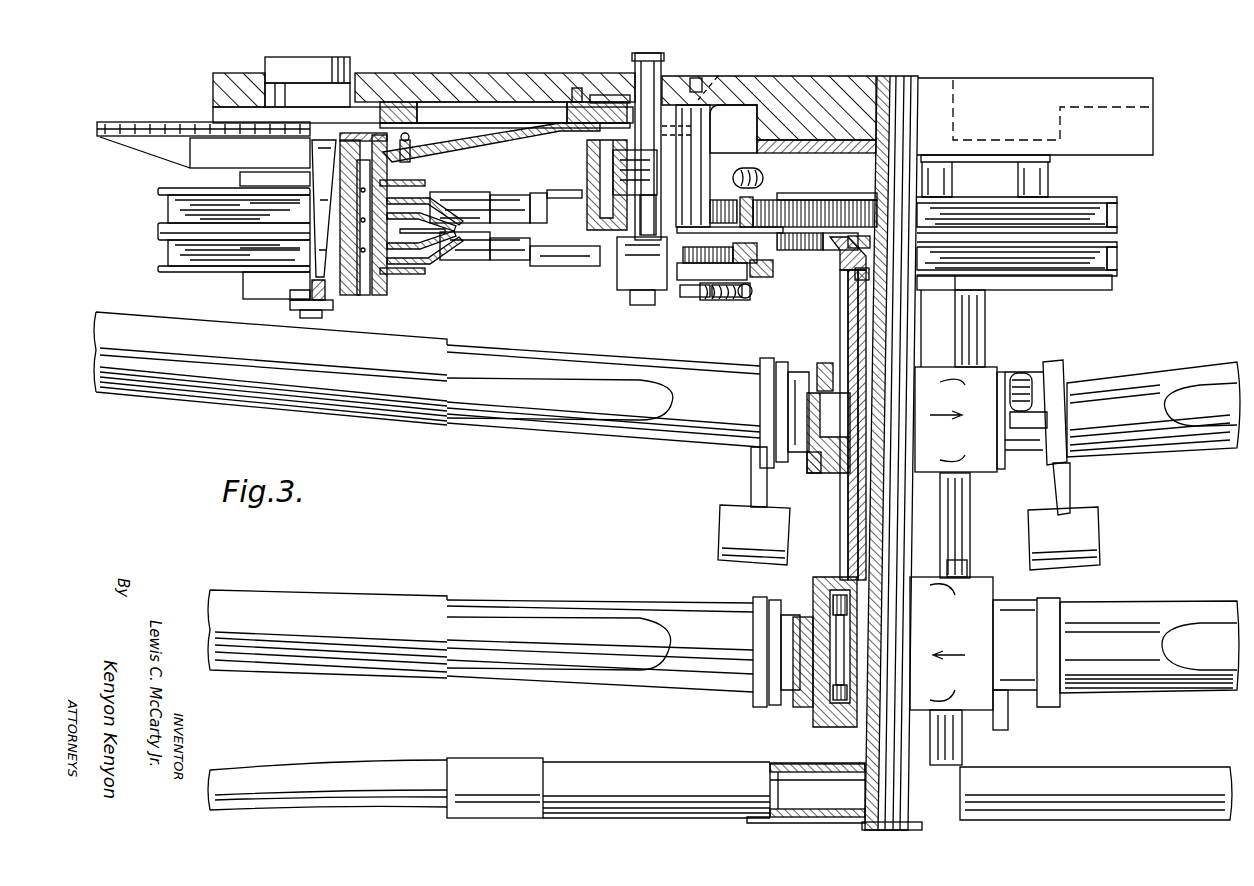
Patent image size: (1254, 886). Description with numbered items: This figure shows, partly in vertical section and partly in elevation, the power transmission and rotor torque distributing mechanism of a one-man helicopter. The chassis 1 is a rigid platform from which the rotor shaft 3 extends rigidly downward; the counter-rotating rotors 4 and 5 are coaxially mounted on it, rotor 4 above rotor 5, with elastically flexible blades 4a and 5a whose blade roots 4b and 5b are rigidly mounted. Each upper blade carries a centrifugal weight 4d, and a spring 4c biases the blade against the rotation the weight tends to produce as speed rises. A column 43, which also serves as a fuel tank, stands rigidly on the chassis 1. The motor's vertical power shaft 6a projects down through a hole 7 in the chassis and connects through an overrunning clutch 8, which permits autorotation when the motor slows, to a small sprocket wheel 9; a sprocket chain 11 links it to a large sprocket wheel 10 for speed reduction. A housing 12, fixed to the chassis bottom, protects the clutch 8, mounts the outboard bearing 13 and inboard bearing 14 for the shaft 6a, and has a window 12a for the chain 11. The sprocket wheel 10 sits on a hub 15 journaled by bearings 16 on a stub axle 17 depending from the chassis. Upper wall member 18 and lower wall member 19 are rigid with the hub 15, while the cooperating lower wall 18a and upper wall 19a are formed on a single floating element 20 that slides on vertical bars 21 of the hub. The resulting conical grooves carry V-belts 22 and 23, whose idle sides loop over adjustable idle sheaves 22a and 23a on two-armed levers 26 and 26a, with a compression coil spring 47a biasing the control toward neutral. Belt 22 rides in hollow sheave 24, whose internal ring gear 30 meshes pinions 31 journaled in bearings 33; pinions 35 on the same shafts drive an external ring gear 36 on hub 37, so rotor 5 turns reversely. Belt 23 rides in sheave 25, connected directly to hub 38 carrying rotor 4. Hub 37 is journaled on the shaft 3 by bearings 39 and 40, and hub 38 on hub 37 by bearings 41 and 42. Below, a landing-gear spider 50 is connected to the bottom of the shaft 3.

The chassis 1 is at (215, 82).
The rotor shaft 3 is at (893, 90).
The rotor 4 is at (275, 417).
The blades 4a is at (425, 430).
The blade roots 4b is at (800, 458).
The spring 4c is at (1022, 373).
The centrifugal weight 4d is at (725, 530).
The rotor 5 is at (266, 680).
The blades 5a is at (412, 681).
The blade roots 5b is at (790, 695).
The vertical power shaft 6a is at (660, 66).
The hole 7 is at (637, 85).
The overrunning clutch 8 is at (615, 175).
The sprocket wheel 9 is at (570, 123).
The sprocket wheel 10 is at (160, 150).
The sprocket chain 11 is at (170, 126).
The housing 12 is at (700, 150).
The window 12a is at (580, 146).
The outboard bearing 13 is at (590, 210).
The inboard bearing 14 is at (598, 95).
The hub 15 is at (242, 181).
The bearings 16 is at (328, 298).
The stub axle 17 is at (445, 205).
The upper wall member 18 is at (452, 220).
The lower wall 18a is at (470, 232).
The lower wall member 19 is at (425, 266).
The upper wall 19a is at (452, 248).
The floating element 20 is at (147, 244).
The vertical bars 21 is at (386, 296).
The V-belt 22 is at (168, 207).
The idle sheave 22a is at (560, 193).
The V-belt 23 is at (168, 254).
The idle sheave 23a is at (567, 267).
The sheave 24 is at (1118, 200).
The sheave 25 is at (1118, 272).
The two-armed lever 26 is at (762, 183).
The two-armed lever 26a is at (655, 292).
The internal ring gear 30 is at (835, 205).
The pinions 31 is at (795, 252).
The bearings 33 is at (762, 173).
The pinion 35 is at (830, 252).
The bracket corner 36 is at (835, 272).
The hub 37 is at (849, 325).
The hub 38 is at (862, 346).
The bearing 39 is at (838, 598).
The bearing 40 is at (876, 244).
The bearing 41 is at (865, 455).
The bearing 42 is at (862, 282).
The column 43 is at (286, 62).
The compression coil spring 47a is at (703, 295).
The spider 50 is at (362, 773).